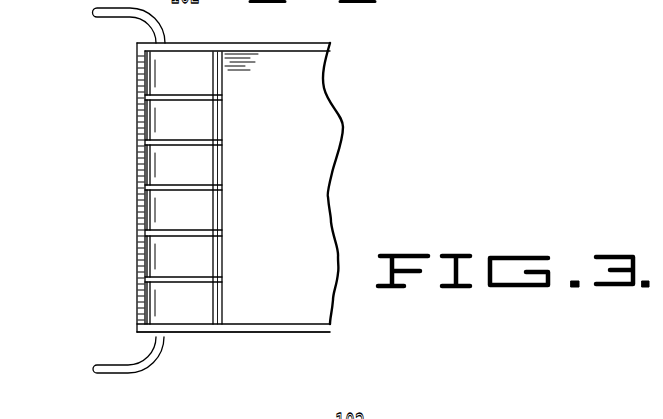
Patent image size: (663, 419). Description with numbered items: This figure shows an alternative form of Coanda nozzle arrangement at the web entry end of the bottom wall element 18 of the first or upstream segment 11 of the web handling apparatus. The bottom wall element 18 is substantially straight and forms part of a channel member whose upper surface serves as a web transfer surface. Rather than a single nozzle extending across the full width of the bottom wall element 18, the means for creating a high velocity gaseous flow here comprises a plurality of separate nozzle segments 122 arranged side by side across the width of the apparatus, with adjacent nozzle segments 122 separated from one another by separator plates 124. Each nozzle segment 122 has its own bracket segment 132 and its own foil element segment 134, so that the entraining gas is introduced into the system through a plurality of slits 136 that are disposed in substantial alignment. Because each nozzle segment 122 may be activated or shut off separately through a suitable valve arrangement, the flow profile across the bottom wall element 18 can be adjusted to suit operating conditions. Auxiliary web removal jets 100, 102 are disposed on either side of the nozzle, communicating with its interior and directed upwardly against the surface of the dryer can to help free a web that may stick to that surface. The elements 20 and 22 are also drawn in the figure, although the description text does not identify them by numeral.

The first segment 11 is at (259, 338).
The bottom wall element 18 is at (330, 172).
The bottom plate 20 is at (302, 331).
The top plate 22 is at (327, 45).
The auxiliary web removal jet 100 is at (138, 376).
The auxiliary web removal jet 102 is at (147, 8).
The nozzle segment 122 is at (210, 119).
The separator plate 124 is at (143, 97).
The bracket segment 132 is at (137, 62).
The foil element segment 134 is at (223, 65).
The slit 136 is at (141, 79).